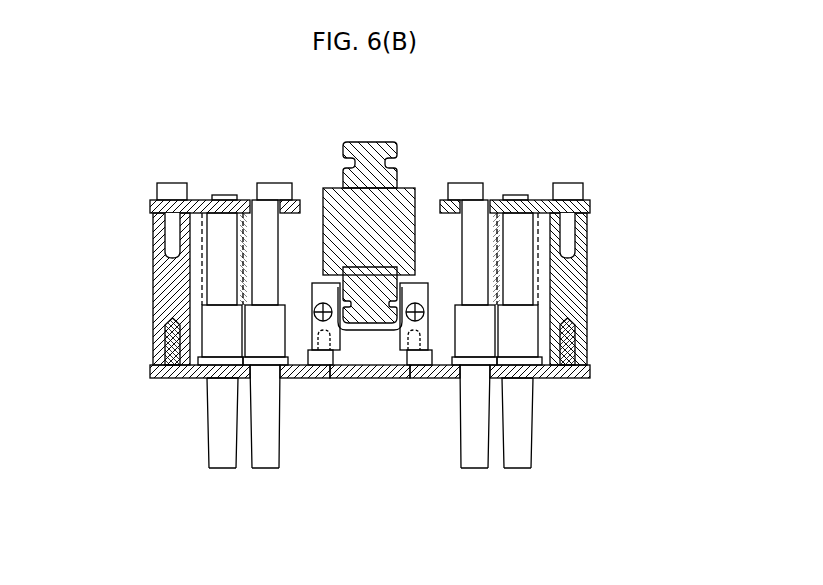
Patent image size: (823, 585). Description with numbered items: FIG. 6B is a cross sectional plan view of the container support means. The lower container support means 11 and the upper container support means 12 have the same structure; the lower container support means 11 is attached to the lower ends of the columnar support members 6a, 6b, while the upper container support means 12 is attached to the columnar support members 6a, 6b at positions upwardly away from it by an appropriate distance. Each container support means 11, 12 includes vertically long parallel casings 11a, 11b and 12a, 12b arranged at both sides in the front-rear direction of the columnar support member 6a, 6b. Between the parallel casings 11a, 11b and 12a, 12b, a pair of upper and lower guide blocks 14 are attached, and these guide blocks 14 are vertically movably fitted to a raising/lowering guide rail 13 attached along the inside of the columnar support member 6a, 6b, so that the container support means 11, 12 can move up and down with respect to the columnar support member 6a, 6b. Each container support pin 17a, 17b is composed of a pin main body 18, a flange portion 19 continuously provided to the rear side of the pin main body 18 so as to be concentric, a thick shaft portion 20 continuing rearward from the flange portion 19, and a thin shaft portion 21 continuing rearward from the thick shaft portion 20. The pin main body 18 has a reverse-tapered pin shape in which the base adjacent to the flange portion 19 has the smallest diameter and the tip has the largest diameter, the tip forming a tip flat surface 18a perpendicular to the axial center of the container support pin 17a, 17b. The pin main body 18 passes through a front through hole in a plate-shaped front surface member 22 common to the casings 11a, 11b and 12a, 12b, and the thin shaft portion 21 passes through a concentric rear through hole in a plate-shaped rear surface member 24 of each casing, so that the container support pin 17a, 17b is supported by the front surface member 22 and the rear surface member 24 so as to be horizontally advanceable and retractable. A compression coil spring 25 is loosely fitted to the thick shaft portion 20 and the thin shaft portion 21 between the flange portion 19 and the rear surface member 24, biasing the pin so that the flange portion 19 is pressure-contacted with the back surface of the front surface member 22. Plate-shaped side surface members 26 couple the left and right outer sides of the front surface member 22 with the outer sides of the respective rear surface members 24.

The lower container support means 11 is at (364, 299).
The upper container support means 12 is at (364, 299).
The parallel casing 11a is at (186, 409).
The parallel casing 12a is at (183, 387).
The parallel casing 11b is at (550, 413).
The parallel casing 12b is at (562, 387).
The columnar support member 6a is at (327, 187).
The columnar support member 6b is at (325, 190).
The compression coil spring 25 is at (240, 240).
The rear surface member 24 is at (233, 240).
The thin shaft portion 21 is at (262, 258).
The side surface member 26 is at (162, 292).
The thick shaft portion 20 is at (258, 320).
The flange portion 19 is at (240, 338).
The pin main body 18 is at (358, 466).
The container support pin 17a is at (290, 461).
The container support pin 17b is at (201, 460).
The tip flat surface 18a is at (263, 468).
The guide block 14 is at (352, 338).
The front surface member 22 is at (369, 378).
The raising/lowering guide rail 13 is at (378, 318).